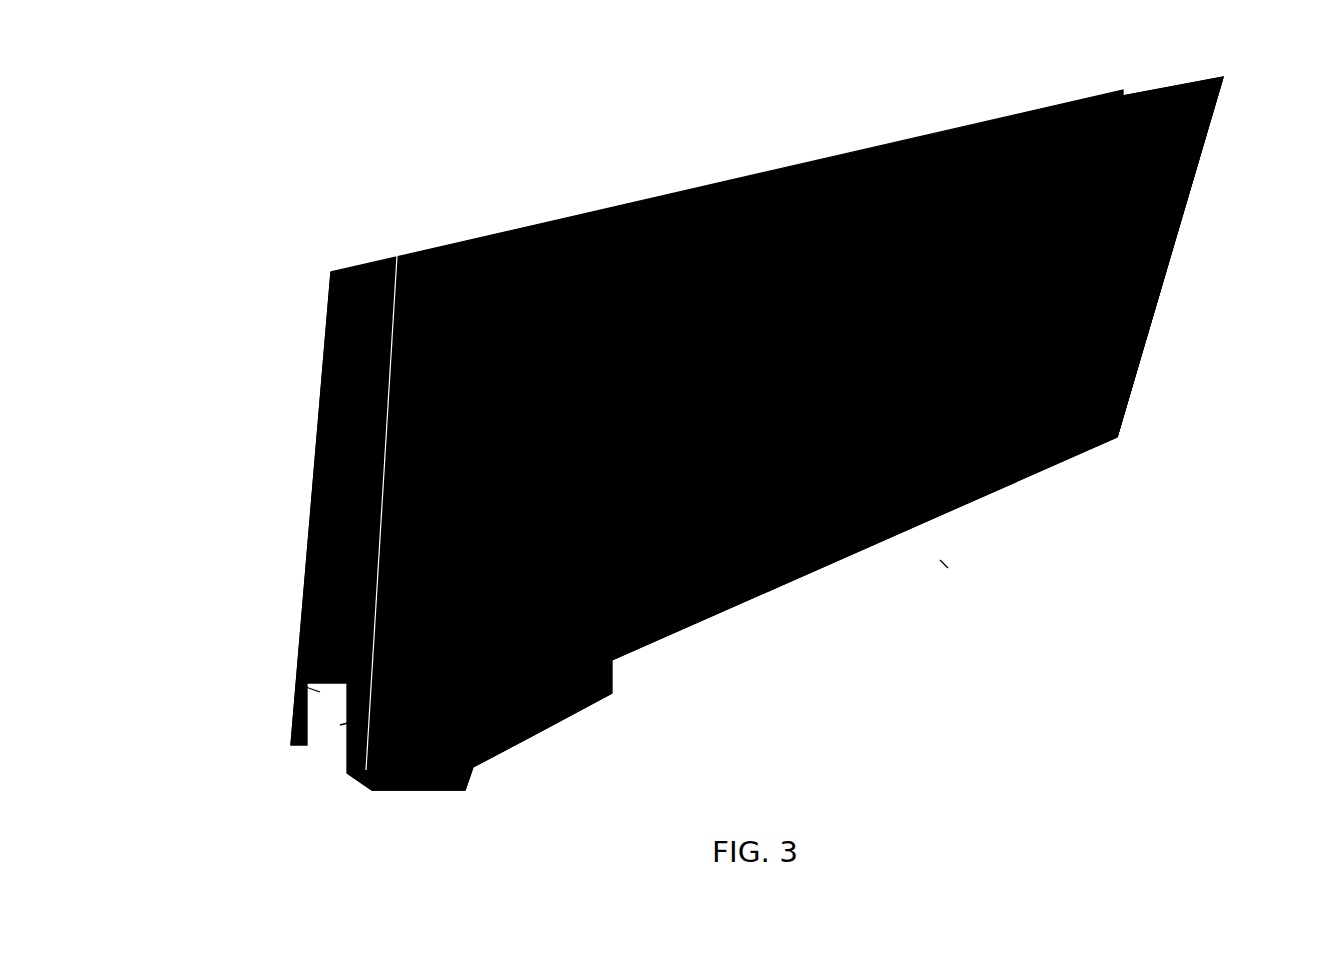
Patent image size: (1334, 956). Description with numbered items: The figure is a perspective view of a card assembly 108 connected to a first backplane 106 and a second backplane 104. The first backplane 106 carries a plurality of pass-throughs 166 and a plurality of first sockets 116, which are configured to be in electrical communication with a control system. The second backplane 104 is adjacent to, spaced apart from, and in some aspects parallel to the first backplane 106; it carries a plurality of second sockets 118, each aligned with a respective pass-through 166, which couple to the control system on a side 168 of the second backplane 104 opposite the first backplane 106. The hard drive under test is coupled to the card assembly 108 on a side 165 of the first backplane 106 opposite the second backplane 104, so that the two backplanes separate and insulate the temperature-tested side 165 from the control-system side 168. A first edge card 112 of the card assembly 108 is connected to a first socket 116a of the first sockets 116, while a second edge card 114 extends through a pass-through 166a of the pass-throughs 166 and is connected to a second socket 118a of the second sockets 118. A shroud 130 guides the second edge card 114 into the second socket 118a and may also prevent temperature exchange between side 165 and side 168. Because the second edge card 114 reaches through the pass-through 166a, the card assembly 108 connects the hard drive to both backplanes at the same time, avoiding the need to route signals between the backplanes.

The second backplane 104 is at (437, 245).
The first backplane 106 is at (1202, 147).
The card assembly 108 is at (632, 723).
The first edge card 112 is at (513, 720).
The second edge card 114 is at (380, 760).
The first sockets 116 is at (1183, 220).
The first socket 116a is at (693, 623).
The second sockets 118 is at (323, 368).
The second socket 118a is at (300, 688).
The shroud 130 is at (303, 638).
The side 165 is at (952, 572).
The pass-throughs 166 is at (1207, 430).
The pass-through 166a is at (347, 723).
The side 168 is at (362, 214).